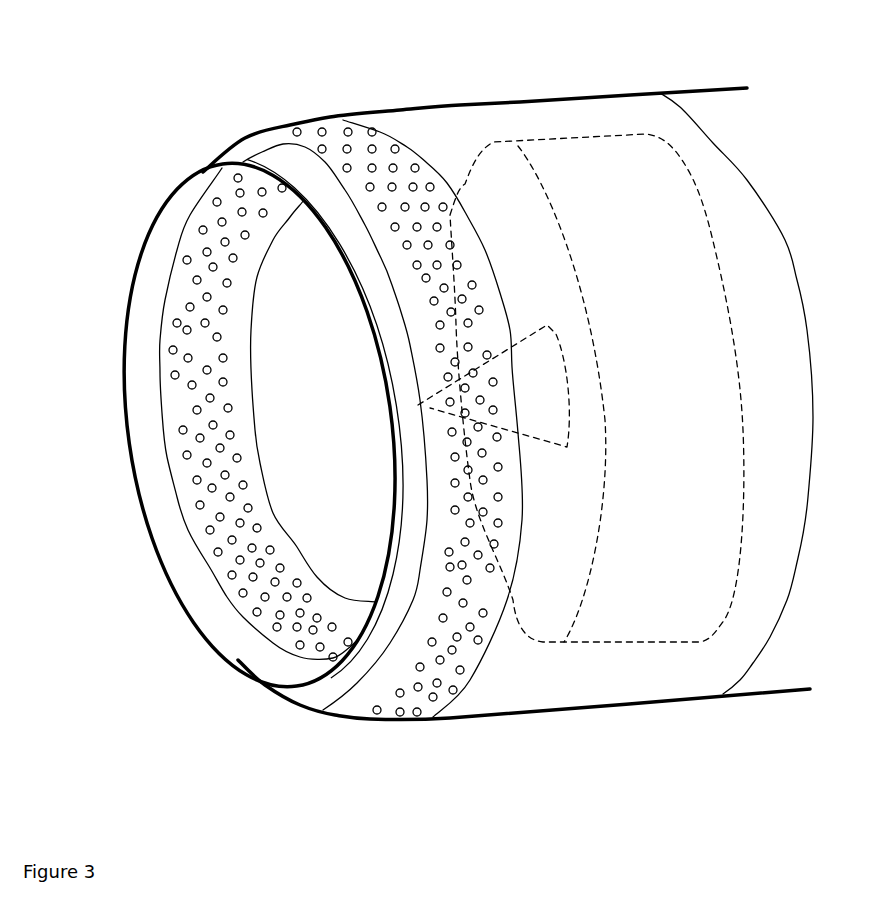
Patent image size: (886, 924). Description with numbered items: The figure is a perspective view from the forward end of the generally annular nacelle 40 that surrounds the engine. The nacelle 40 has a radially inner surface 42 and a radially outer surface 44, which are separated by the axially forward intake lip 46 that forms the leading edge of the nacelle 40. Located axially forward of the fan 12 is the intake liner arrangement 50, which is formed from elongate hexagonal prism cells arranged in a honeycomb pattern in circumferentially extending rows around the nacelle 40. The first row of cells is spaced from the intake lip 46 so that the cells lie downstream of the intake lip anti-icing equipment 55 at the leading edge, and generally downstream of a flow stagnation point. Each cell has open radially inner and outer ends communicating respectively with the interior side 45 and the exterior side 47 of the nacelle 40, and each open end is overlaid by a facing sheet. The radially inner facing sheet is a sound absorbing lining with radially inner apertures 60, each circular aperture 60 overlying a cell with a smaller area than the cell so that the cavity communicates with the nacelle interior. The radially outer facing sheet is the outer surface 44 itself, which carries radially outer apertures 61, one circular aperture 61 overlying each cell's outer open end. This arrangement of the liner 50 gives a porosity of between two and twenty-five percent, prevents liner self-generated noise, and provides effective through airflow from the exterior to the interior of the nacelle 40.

The nacelle 40 is at (198, 109).
The outer surface 44 is at (425, 109).
The exterior side 47 is at (563, 121).
The fan 12 is at (638, 237).
The intake lip anti-icing equipment 55 is at (360, 273).
The inner surface 42 is at (267, 342).
The interior side 45 is at (297, 460).
The radially inner apertures 60 is at (220, 550).
The intake lip 46 is at (212, 644).
The radially outer apertures 61 is at (358, 714).
The intake liner arrangement 50 is at (474, 660).